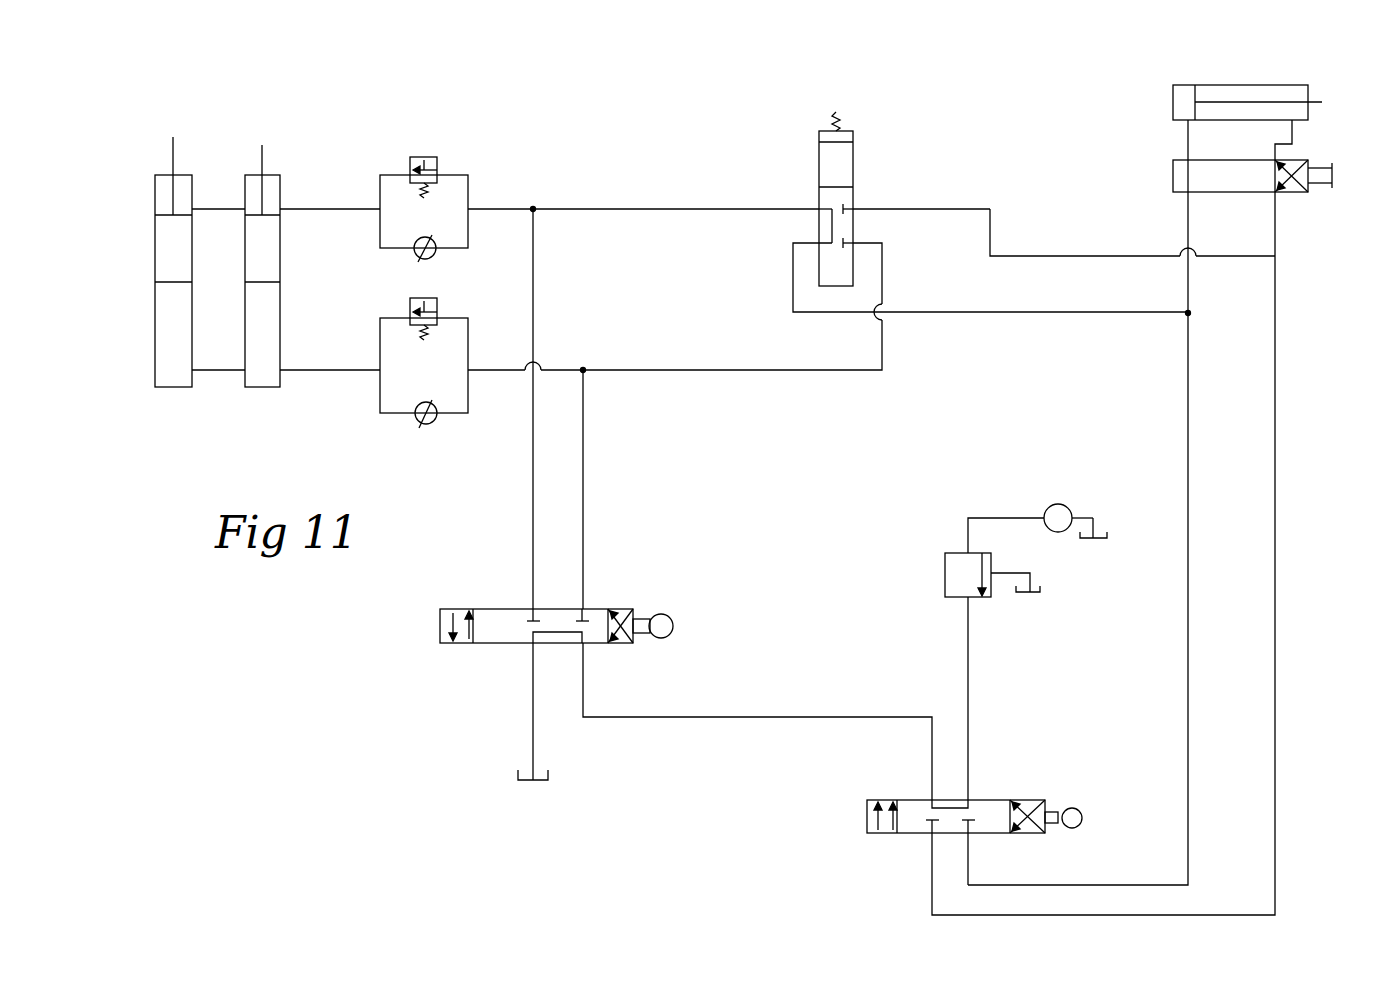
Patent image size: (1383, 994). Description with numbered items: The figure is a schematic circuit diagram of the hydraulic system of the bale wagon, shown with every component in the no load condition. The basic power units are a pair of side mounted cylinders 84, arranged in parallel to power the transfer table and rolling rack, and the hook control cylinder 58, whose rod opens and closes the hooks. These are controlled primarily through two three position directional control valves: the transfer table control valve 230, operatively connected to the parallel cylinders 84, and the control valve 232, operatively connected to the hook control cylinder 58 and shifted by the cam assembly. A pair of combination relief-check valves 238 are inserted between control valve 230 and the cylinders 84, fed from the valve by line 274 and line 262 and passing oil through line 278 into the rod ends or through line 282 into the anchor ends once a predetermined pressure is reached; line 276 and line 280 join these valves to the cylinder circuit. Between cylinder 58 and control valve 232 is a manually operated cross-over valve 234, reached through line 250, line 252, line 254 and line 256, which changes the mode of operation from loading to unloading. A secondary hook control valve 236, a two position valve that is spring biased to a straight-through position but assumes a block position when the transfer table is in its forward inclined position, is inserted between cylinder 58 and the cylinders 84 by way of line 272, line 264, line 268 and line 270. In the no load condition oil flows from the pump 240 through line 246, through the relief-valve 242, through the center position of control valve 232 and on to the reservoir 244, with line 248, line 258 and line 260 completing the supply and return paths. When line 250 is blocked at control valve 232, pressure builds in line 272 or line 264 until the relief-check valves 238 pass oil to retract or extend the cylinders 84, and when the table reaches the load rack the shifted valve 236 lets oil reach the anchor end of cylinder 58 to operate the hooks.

The hook control cylinder 58 is at (1235, 85).
The side mounted cylinders 84 is at (160, 352).
The transfer table control valve 230 is at (597, 609).
The control valve 232 is at (891, 838).
The cross-over valve 234 is at (1304, 194).
The secondary hook control valve 236 is at (854, 134).
The combination relief-check valves 238 is at (470, 179).
The pump 240 is at (1066, 505).
The relief-valve 242 is at (940, 572).
The reservoir 244 is at (521, 786).
The line 246 is at (981, 502).
The supply line 248 is at (970, 693).
The line 250 is at (1038, 888).
The line 252 is at (1185, 128).
The line 254 is at (1300, 140).
The line 256 is at (1278, 360).
The line 258 is at (693, 717).
The line 260 is at (533, 693).
The line 262 is at (584, 488).
The line 264 is at (737, 370).
The pilot line 268 is at (1040, 313).
The line 270 is at (992, 246).
The line 272 is at (645, 209).
The line 274 is at (532, 413).
The line 276 is at (509, 217).
The line 278 is at (295, 210).
The line 280 is at (310, 370).
The line 282 is at (492, 368).